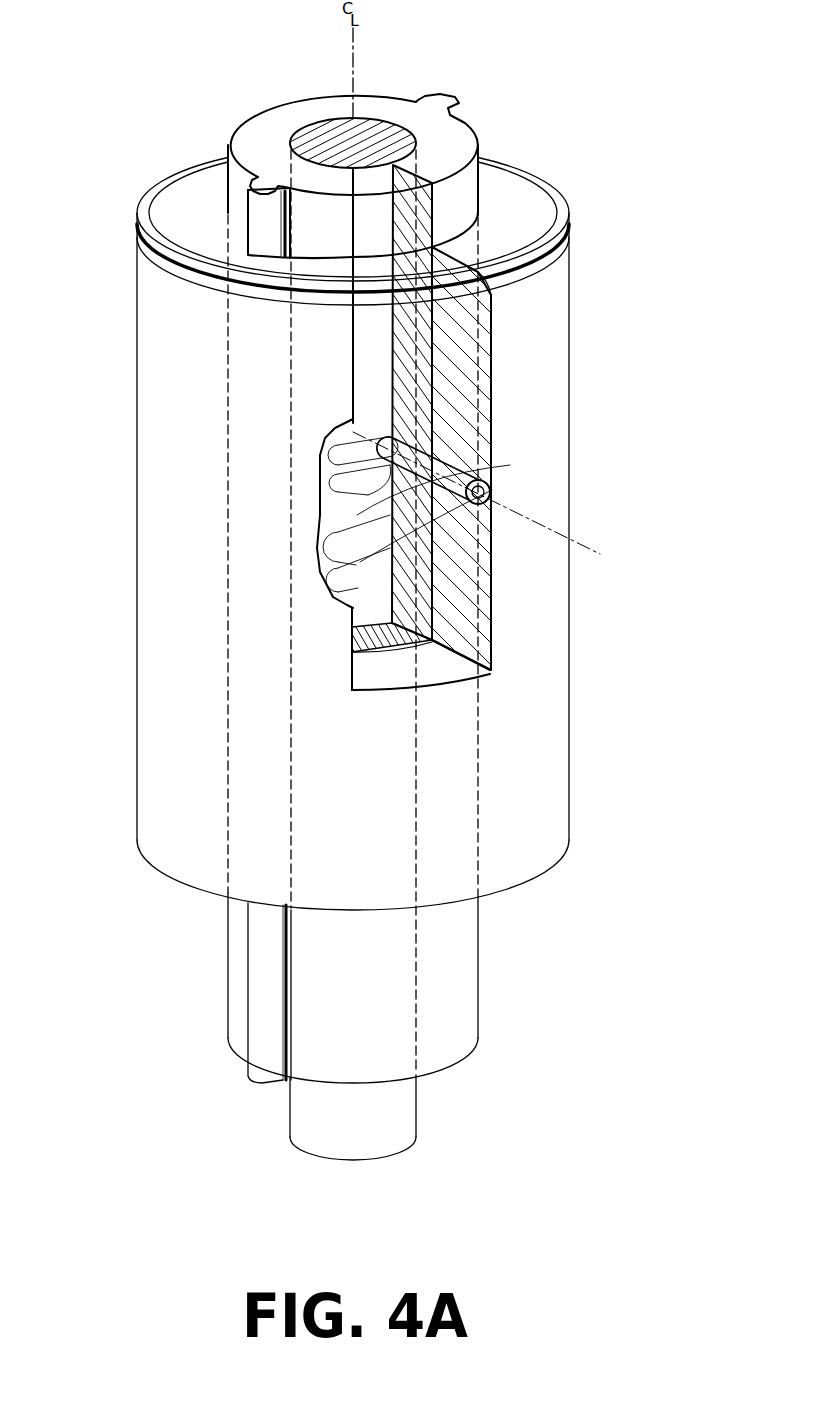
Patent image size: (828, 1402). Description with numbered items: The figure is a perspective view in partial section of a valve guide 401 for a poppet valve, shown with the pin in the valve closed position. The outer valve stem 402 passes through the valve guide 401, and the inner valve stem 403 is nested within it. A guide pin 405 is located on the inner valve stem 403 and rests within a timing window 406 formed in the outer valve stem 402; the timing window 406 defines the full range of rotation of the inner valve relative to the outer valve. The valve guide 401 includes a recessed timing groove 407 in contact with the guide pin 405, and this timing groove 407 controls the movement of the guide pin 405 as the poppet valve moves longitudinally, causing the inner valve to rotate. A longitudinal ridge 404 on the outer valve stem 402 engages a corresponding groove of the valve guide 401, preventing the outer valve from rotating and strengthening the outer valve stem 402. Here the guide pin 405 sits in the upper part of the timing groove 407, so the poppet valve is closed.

The valve guide 401 is at (533, 202).
The outer valve stem 402 is at (388, 108).
The inner valve stem 403 is at (323, 135).
The longitudinal ridge 404 is at (253, 220).
The guide pin 405 is at (453, 478).
The timing window 406 is at (364, 485).
The timing groove 407 is at (370, 570).